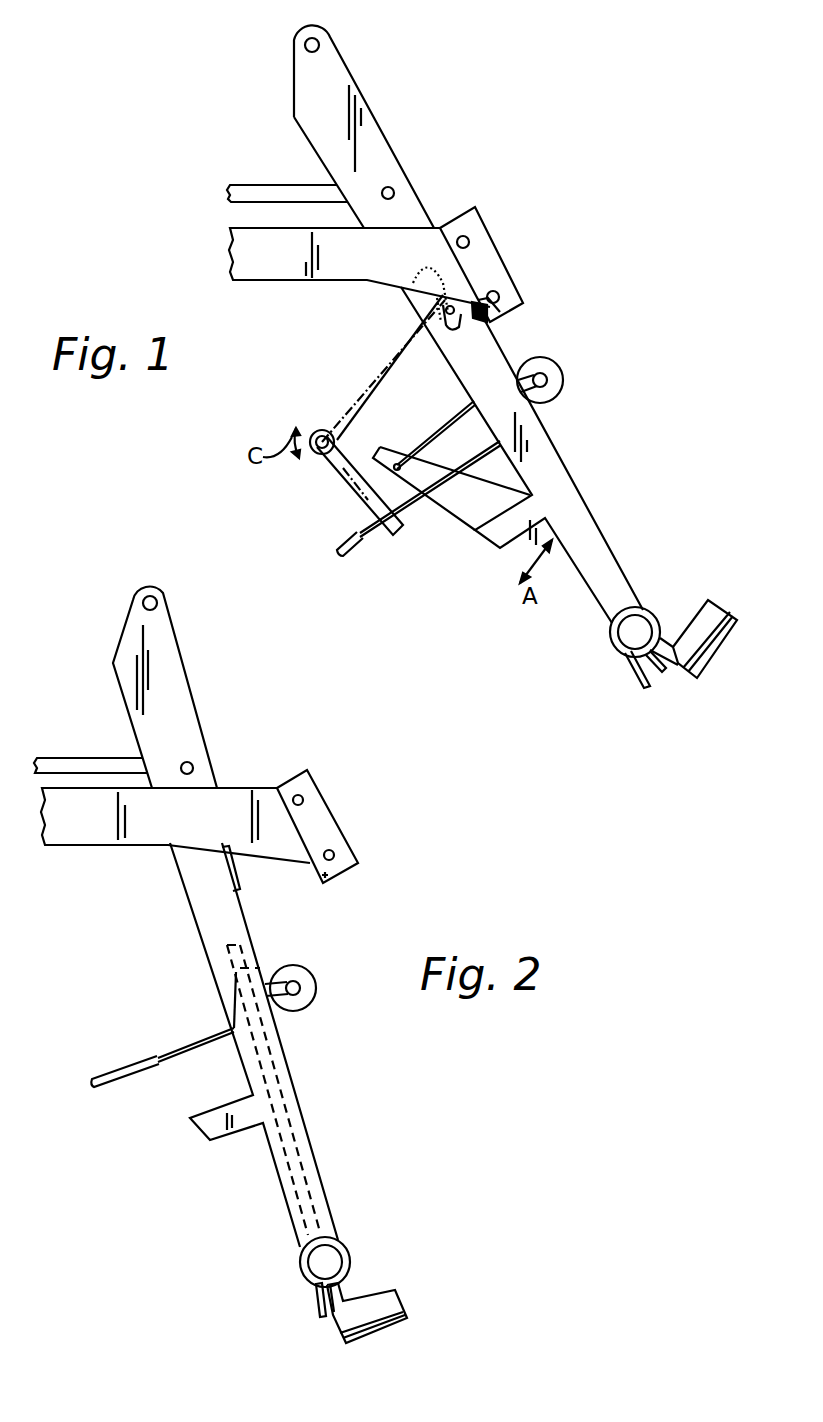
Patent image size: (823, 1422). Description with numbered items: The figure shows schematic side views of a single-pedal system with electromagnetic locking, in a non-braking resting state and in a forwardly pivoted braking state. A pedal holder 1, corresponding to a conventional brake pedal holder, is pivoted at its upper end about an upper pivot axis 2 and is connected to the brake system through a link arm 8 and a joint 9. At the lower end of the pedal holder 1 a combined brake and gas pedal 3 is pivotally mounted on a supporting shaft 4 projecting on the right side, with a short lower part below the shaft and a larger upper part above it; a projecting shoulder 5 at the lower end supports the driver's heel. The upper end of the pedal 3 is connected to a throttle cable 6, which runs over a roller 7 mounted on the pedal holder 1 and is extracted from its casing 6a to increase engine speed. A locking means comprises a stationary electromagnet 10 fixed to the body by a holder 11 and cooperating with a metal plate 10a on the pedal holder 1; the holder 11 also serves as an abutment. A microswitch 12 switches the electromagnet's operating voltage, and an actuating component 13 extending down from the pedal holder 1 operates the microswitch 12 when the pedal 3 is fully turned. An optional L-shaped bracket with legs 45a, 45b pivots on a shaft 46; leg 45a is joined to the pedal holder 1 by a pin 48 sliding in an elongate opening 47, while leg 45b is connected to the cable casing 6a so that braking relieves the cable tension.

In FIG. 1, the pedal holder 1 is at (560, 462).
In FIG. 2, the pedal holder 1 is at (243, 913).
In FIG. 1, the upper pivot axis 2 is at (320, 45).
In FIG. 2, the upper pivot axis 2 is at (143, 602).
In FIG. 1, the combined brake and gas pedal 3 is at (470, 523).
In FIG. 2, the combined brake and gas pedal 3 is at (273, 1080).
In FIG. 1, the supporting shaft 4 is at (640, 625).
In FIG. 2, the supporting shaft 4 is at (315, 1262).
In FIG. 1, the projecting shoulder 5 is at (712, 606).
In FIG. 2, the projecting shoulder 5 is at (395, 1292).
In FIG. 1, the throttle cable 6 is at (440, 445).
In FIG. 2, the throttle cable 6 is at (187, 1043).
In FIG. 1, the cable casing 6a is at (346, 549).
In FIG. 2, the cable casing 6a is at (122, 1083).
In FIG. 1, the roller 7 is at (555, 372).
In FIG. 2, the roller 7 is at (305, 975).
In FIG. 1, the link arm 8 is at (272, 186).
In FIG. 2, the link arm 8 is at (73, 760).
In FIG. 1, the joint 9 is at (394, 190).
In FIG. 2, the joint 9 is at (193, 765).
In FIG. 1, the electromagnet 10 is at (498, 248).
In FIG. 2, the electromagnet 10 is at (330, 813).
In FIG. 1, the metal plate 10a is at (500, 300).
In FIG. 2, the metal plate 10a is at (238, 880).
In FIG. 1, the holder 11 is at (283, 270).
In FIG. 2, the holder 11 is at (92, 835).
In FIG. 1, the microswitch 12 is at (663, 672).
In FIG. 2, the microswitch 12 is at (338, 1296).
In FIG. 1, the actuating component 13 is at (635, 672).
In FIG. 2, the actuating component 13 is at (308, 1292).
In FIG. 1, the bracket leg 45a is at (360, 380).
In FIG. 1, the bracket leg 45b is at (345, 492).
In FIG. 1, the shaft 46 is at (328, 423).
In FIG. 1, the elongate opening 47 is at (490, 320).
In FIG. 1, the pin 48 is at (405, 295).